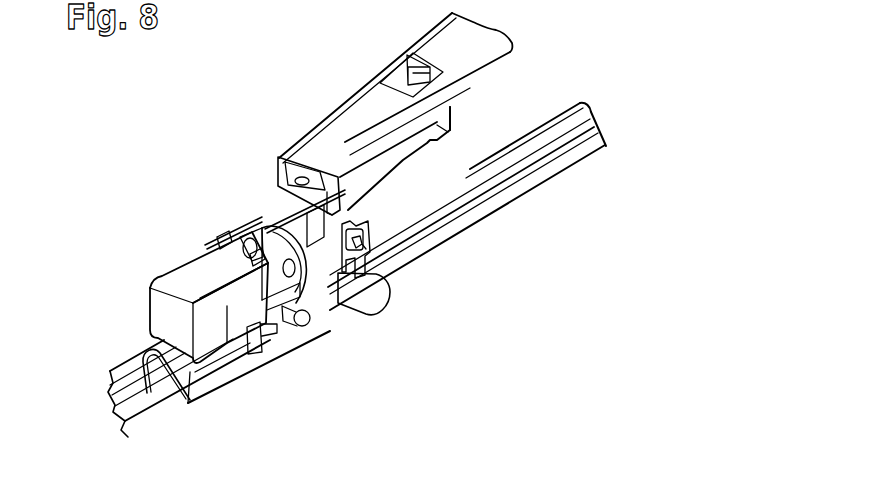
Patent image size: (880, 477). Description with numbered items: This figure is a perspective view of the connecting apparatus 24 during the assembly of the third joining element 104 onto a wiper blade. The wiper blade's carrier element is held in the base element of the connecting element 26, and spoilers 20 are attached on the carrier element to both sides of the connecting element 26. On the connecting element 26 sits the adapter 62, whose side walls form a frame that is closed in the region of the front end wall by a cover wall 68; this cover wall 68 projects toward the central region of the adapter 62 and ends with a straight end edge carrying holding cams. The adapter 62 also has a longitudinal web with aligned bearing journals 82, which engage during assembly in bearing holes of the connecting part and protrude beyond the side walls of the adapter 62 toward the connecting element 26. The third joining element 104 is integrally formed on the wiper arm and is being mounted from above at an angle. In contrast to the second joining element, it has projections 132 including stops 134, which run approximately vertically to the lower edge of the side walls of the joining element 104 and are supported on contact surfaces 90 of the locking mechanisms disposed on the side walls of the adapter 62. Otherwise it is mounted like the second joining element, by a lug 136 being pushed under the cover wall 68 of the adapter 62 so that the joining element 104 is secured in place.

The spoilers 20 is at (544, 158).
The connecting apparatus 24 is at (240, 205).
The connecting element 26 is at (287, 371).
The adapter 62 is at (165, 286).
The cover wall 68 is at (203, 266).
The bearing journals 82 is at (305, 322).
The contact surfaces 90 is at (358, 242).
The third joining element 104 is at (393, 152).
The projections 132 is at (448, 132).
The stops 134 is at (449, 108).
The lug 136 is at (288, 175).